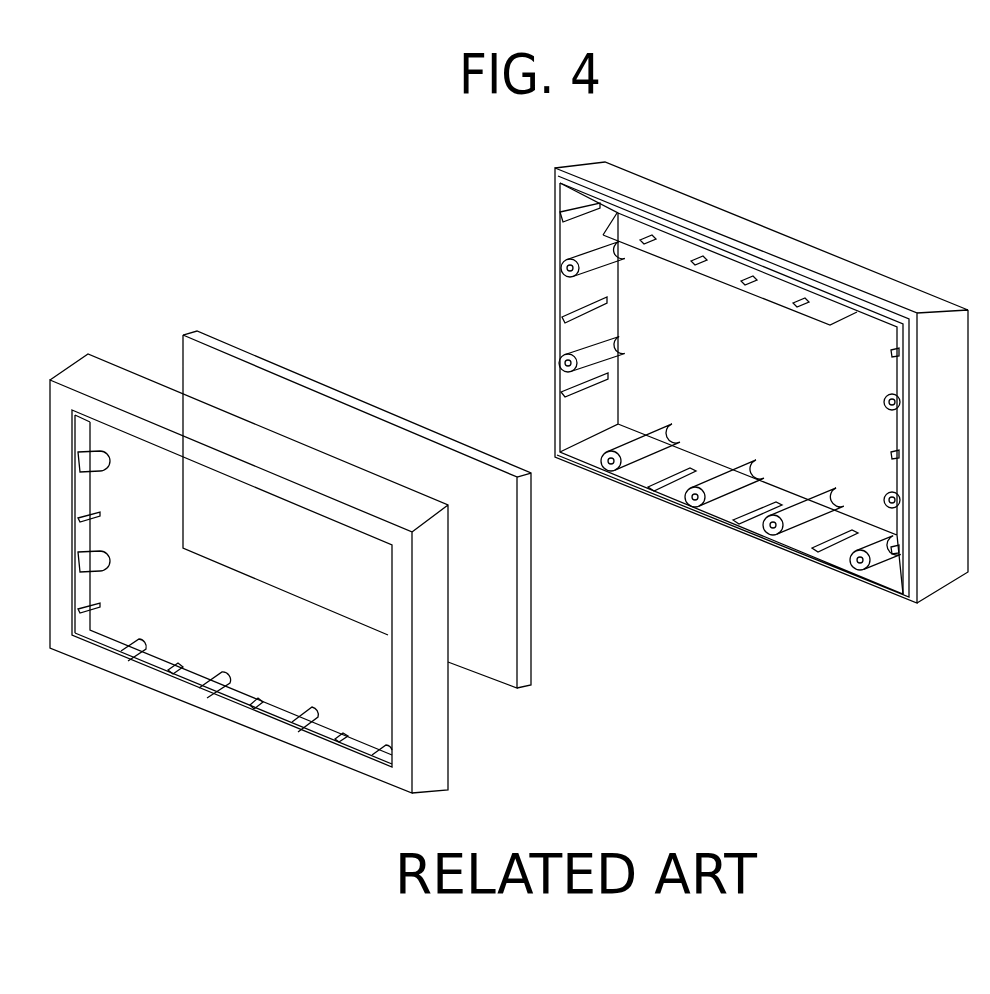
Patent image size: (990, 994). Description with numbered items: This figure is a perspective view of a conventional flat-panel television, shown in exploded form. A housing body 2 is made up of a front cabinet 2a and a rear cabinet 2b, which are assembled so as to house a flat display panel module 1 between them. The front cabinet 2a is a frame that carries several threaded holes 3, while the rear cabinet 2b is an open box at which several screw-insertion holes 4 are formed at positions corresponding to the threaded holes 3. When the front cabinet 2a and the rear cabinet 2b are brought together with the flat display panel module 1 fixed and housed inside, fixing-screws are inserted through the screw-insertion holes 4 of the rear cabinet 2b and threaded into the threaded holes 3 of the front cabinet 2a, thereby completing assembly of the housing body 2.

The flat display panel module 1 is at (530, 645).
The housing body 2 is at (158, 172).
The front cabinet 2a is at (120, 320).
The rear cabinet 2b is at (537, 200).
The threaded holes 3 is at (383, 740).
The screw-insertion holes 4 is at (865, 585).